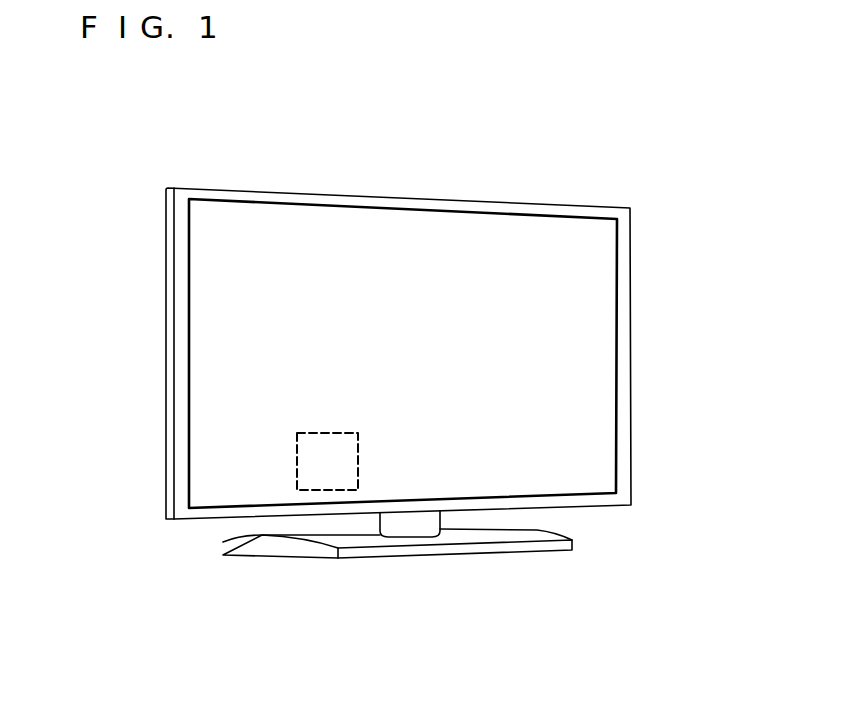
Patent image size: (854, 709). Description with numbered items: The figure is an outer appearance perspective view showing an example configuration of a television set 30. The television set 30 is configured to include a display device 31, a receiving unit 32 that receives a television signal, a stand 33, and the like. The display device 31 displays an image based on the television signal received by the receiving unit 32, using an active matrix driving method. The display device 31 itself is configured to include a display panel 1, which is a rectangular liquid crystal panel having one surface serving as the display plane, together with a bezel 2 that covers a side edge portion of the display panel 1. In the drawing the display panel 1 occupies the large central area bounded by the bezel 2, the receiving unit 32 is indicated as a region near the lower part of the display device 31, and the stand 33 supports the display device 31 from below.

The television set 30 is at (670, 111).
The bezel 2 is at (631, 275).
The display panel 1 is at (582, 333).
The display device 31 is at (583, 406).
The receiving unit 32 is at (293, 462).
The stand 33 is at (520, 538).